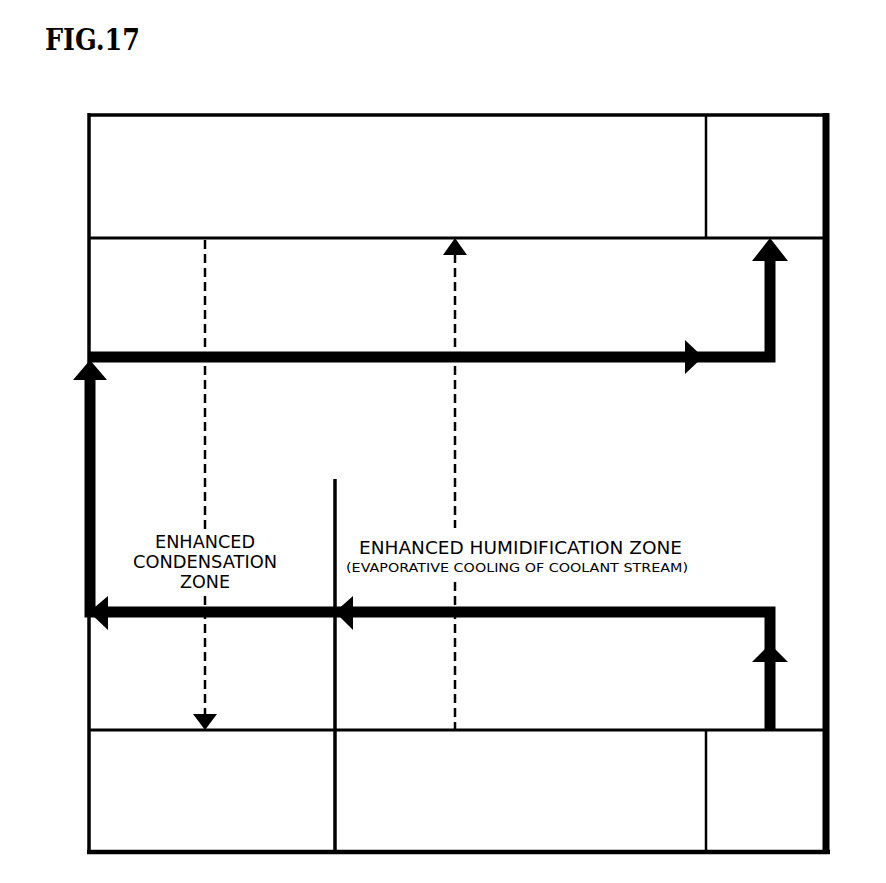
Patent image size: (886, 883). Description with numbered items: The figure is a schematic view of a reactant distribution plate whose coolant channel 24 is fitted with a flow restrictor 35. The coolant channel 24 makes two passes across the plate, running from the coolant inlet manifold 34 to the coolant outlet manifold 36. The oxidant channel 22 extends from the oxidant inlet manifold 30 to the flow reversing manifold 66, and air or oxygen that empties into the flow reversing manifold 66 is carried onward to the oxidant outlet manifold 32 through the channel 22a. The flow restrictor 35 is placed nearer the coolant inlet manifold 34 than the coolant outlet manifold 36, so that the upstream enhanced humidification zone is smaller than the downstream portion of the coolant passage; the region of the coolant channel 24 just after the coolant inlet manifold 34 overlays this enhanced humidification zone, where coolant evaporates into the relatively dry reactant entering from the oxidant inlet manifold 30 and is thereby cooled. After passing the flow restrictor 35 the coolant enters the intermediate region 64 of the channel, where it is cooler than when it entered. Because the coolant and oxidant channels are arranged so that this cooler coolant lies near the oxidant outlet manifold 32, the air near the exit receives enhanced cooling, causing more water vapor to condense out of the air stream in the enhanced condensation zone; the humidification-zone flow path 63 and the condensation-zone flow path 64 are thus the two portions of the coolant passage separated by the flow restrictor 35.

The oxidant channel 22 is at (455, 639).
The oxidant return channel 22a is at (205, 272).
The coolant channel 24 is at (643, 363).
The oxidant inlet manifold 30 is at (495, 794).
The oxidant outlet manifold 32 is at (192, 794).
The coolant inlet manifold 34 is at (757, 796).
The flow restrictor 35 is at (335, 512).
The coolant outlet manifold 36 is at (785, 182).
The humidification zone flow path 63 is at (572, 620).
The intermediate region of the coolant channel 64 is at (160, 618).
The flow reversing manifold 66 is at (396, 180).